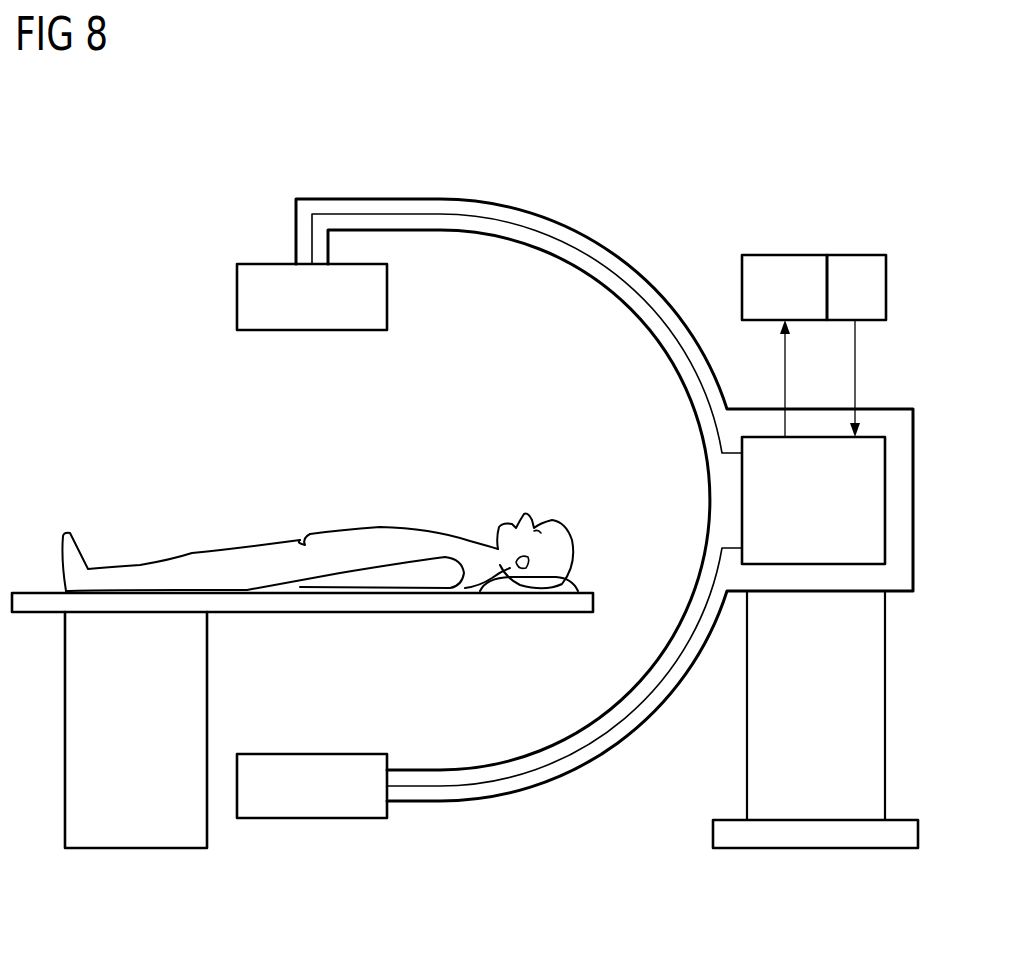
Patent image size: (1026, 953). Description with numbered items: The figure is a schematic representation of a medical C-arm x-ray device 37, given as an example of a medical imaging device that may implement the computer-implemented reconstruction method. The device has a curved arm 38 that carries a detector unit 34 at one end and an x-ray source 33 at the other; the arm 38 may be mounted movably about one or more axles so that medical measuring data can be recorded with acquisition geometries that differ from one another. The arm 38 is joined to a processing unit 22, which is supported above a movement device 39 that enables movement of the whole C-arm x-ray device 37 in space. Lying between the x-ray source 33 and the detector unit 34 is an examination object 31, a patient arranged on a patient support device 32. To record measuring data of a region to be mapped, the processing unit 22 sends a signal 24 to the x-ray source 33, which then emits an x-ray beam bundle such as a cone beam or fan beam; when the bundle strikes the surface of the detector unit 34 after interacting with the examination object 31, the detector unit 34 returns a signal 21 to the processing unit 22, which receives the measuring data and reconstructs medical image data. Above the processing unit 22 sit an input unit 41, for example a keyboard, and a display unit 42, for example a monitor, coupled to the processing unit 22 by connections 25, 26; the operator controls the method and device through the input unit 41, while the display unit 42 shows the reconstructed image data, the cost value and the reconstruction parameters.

The medical C-arm x-ray device 37 is at (549, 134).
The arm 38 is at (345, 198).
The signal 21 is at (394, 213).
The signal 24 is at (482, 787).
The detector unit 34 is at (262, 264).
The x-ray source 33 is at (313, 820).
The processing unit 22 is at (828, 565).
The data connection 25 is at (783, 355).
The control signal connection 26 is at (858, 343).
The input unit 41 is at (780, 255).
The display unit 42 is at (852, 255).
The movement device 39 is at (815, 848).
The patient support device 32 is at (123, 872).
The examination object 31 is at (370, 528).